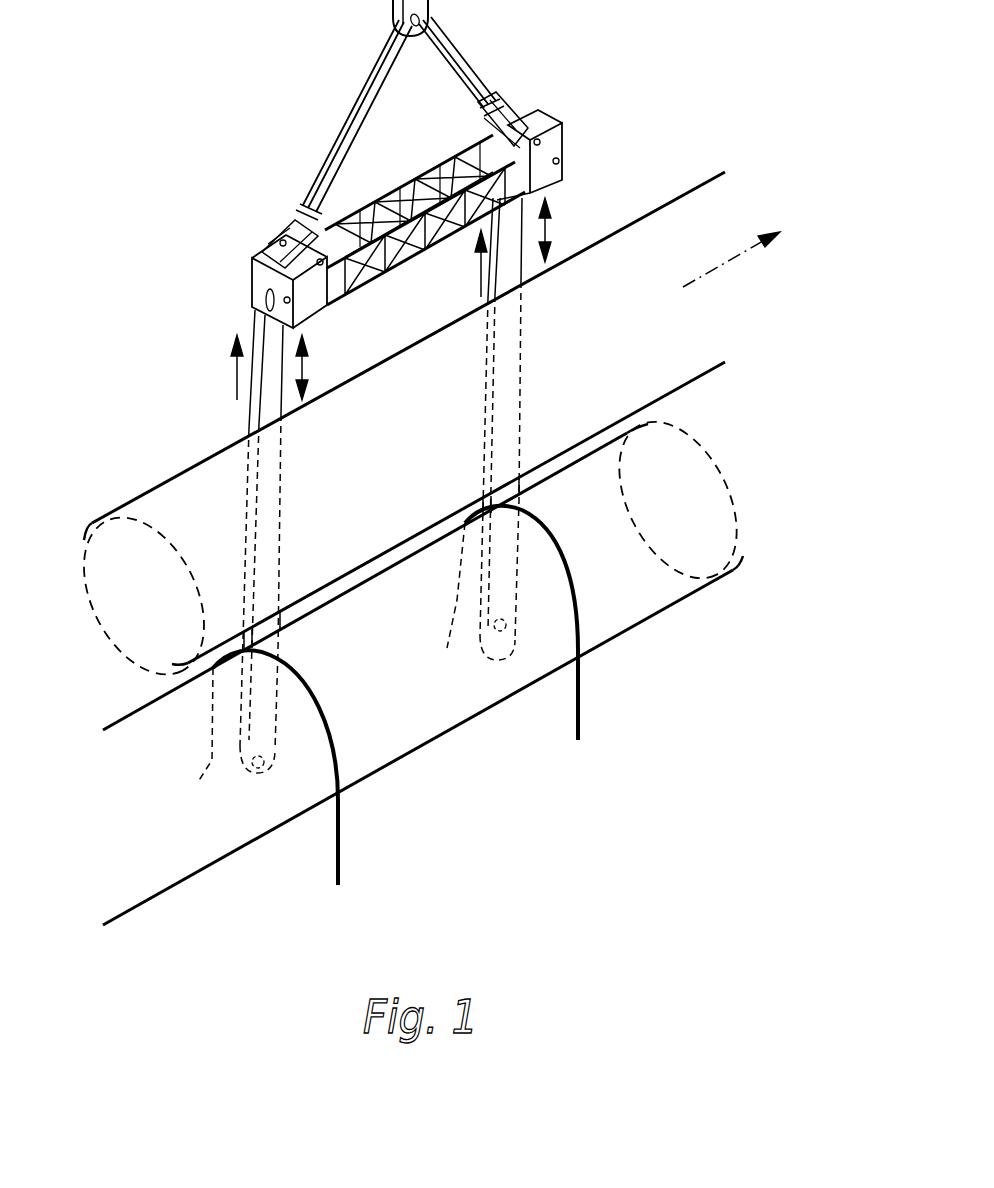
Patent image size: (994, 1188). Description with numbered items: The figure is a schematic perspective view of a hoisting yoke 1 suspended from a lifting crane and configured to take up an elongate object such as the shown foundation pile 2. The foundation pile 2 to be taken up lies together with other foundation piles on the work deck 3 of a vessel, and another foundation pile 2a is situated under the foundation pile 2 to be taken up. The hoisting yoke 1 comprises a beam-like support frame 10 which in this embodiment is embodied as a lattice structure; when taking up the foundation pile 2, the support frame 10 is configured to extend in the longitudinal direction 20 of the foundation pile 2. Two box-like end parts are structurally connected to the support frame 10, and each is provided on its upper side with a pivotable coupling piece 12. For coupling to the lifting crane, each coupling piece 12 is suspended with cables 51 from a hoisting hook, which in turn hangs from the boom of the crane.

The hoisting yoke 1 is at (395, 442).
The foundation pile 2 is at (175, 506).
The another foundation pile 2a is at (178, 840).
The work deck 3 is at (699, 743).
The support frame 10 is at (396, 262).
The pivotable coupling piece 12 is at (520, 123).
The longitudinal direction 20 is at (728, 263).
The cables 51 is at (358, 108).